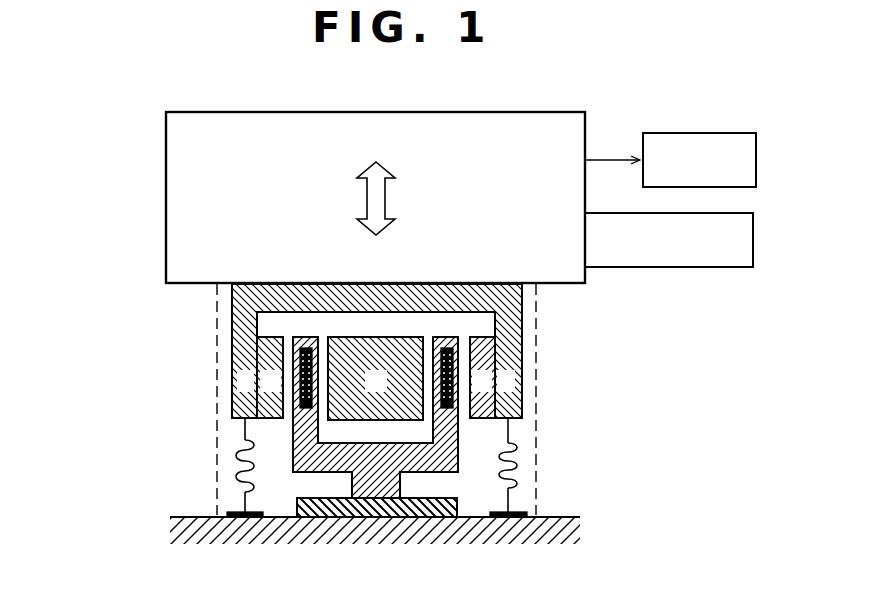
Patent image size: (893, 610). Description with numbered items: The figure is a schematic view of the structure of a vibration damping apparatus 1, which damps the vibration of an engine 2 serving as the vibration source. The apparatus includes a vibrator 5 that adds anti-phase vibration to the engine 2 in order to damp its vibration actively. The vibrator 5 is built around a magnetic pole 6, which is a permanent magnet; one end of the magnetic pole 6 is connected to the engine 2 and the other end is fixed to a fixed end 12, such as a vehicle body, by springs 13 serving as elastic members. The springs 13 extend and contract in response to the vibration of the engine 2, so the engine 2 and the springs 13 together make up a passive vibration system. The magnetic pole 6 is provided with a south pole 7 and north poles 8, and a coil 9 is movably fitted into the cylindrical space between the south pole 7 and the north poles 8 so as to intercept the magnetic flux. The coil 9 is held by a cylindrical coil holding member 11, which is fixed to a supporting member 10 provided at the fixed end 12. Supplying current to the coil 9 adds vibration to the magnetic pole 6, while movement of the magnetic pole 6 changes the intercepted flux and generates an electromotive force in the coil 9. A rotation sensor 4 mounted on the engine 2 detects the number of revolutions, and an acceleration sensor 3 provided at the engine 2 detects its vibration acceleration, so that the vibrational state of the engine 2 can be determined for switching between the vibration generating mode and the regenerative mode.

The vibration damping apparatus 1 is at (393, 400).
The engine 2 is at (166, 172).
The acceleration sensor 3 is at (753, 250).
The rotation sensor 4 is at (756, 187).
The vibrator 5 is at (537, 341).
The magnetic pole 6 is at (230, 318).
The south pole 7 is at (232, 380).
The north poles 8 is at (272, 419).
The coil 9 is at (458, 421).
The supporting member 10 is at (437, 498).
The coil holding member 11 is at (297, 458).
The fixed end 12 is at (513, 511).
The springs 13 is at (517, 462).